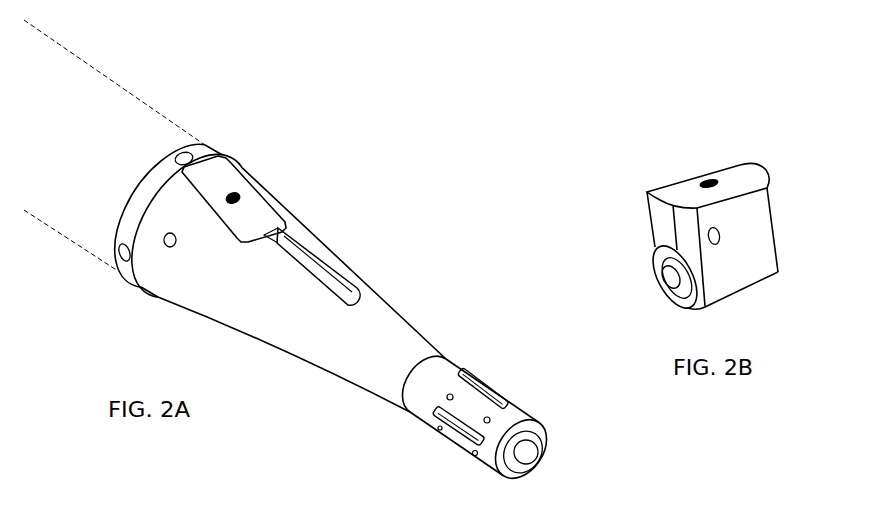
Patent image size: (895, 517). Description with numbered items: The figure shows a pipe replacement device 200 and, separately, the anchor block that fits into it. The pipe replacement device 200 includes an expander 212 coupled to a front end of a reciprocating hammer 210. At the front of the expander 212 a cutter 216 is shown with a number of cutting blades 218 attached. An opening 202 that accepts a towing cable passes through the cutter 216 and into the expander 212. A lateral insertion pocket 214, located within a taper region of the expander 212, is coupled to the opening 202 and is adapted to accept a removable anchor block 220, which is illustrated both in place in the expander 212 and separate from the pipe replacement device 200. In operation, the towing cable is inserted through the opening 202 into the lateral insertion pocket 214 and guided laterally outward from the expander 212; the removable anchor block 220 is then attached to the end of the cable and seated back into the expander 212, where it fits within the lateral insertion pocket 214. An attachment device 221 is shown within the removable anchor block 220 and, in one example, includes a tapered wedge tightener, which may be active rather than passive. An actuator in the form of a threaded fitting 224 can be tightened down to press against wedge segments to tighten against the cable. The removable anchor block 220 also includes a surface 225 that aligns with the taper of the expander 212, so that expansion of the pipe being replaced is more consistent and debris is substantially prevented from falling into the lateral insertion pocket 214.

In FIG. 2A, the pipe replacement device 200 is at (332, 98).
In FIG. 2A, the reciprocating hammer 210 is at (118, 121).
In FIG. 2A, the expander 212 is at (368, 318).
In FIG. 2A, the lateral insertion pocket 214 is at (306, 258).
In FIG. 2A, the cutter 216 is at (480, 442).
In FIG. 2A, the cutting blades 218 is at (462, 380).
In FIG. 2A, the opening 202 is at (522, 448).
In FIG. 2A, the removable anchor block 220 is at (252, 205).
In FIG. 2B, the removable anchor block 220 is at (737, 215).
In FIG. 2B, the attachment device 221 is at (657, 252).
In FIG. 2B, the threaded fitting 224 is at (678, 277).
In FIG. 2A, the surface 225 is at (203, 178).
In FIG. 2B, the surface 225 is at (678, 187).